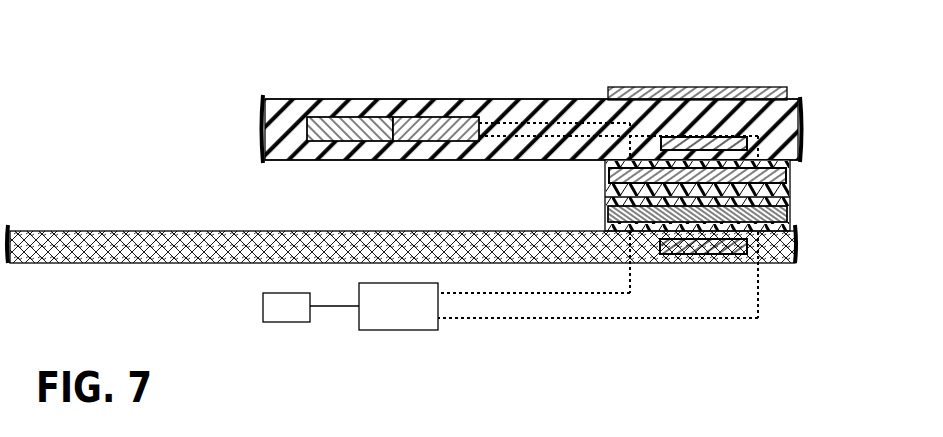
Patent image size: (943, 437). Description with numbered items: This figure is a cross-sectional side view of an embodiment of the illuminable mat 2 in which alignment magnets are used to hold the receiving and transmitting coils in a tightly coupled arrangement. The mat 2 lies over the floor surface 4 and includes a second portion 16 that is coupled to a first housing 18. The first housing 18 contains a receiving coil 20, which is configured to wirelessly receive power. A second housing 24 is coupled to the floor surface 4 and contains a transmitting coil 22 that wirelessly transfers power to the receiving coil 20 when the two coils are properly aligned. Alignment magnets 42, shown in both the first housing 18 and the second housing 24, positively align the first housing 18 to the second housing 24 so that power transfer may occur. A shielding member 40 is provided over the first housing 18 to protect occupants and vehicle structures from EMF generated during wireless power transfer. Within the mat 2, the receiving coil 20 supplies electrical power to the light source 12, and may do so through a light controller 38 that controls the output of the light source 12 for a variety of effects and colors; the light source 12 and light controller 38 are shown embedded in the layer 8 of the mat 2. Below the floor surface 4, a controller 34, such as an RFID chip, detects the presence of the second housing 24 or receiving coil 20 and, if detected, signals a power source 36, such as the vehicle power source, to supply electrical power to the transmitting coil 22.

The mat 2 is at (792, 108).
The floor surface 4 is at (140, 232).
The heating layer 8 is at (363, 100).
The light source 12 is at (332, 118).
The second portion 16 is at (365, 158).
The first housing 18 is at (605, 176).
The receiving coil 20 is at (793, 178).
The transmitting coil 22 is at (793, 263).
The second housing 24 is at (790, 216).
The controller 34 is at (402, 322).
The power source 36 is at (287, 312).
The light controller 38 is at (413, 118).
The shielding member 40 is at (655, 85).
The alignment magnet 42 is at (727, 137).